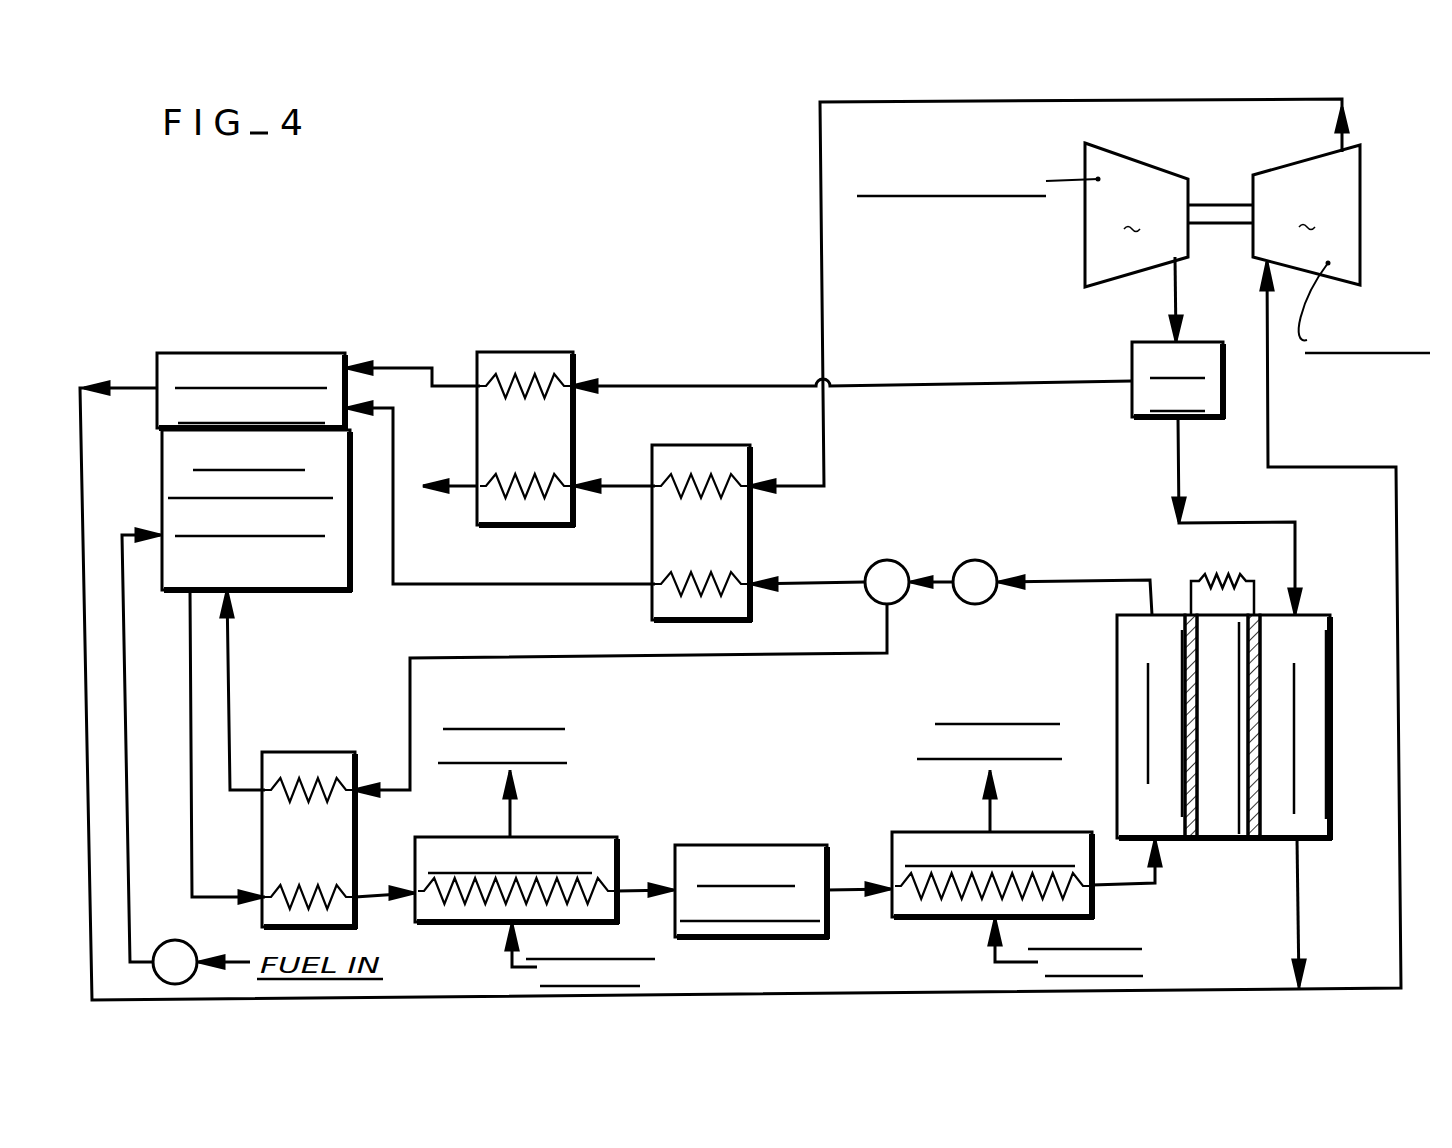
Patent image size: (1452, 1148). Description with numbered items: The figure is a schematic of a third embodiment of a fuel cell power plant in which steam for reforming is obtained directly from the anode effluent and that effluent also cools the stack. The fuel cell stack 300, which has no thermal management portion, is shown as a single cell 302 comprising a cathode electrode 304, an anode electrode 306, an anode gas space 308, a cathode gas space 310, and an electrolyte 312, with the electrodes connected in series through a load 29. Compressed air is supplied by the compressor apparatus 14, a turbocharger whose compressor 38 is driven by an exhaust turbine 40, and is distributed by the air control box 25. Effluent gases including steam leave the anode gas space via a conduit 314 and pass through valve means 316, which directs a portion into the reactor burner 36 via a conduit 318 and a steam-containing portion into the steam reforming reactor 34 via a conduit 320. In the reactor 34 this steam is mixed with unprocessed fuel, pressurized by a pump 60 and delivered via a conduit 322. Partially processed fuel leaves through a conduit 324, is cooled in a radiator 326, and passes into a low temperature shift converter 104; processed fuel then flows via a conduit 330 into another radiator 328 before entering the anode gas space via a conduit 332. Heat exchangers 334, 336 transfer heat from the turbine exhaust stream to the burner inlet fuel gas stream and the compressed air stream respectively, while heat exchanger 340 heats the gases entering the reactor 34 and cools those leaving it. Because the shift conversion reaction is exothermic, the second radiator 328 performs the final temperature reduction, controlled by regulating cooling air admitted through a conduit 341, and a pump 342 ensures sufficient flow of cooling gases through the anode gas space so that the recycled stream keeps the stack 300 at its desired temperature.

The compressor apparatus 14 is at (1143, 223).
The compressor 38 is at (1136, 215).
The exhaust turbine 40 is at (1374, 167).
The air control box 25 is at (1138, 344).
The reactor burner 36 is at (178, 365).
The steam reforming reactor 34 is at (256, 586).
The heat exchanger 336 is at (527, 360).
The heat exchanger 334 is at (698, 457).
The heat exchanger 340 is at (305, 755).
The conduit 318 is at (820, 580).
The valve means 316 is at (887, 560).
The pump 342 is at (977, 560).
The conduit 314 is at (1086, 579).
The conduit 320 is at (793, 661).
The conduit 322 is at (127, 720).
The conduit 324 is at (192, 658).
The pump 60 is at (185, 912).
The radiator 326 is at (560, 838).
The shift converter 104 is at (735, 850).
The conduit 330 is at (845, 885).
The radiator 328 is at (915, 835).
The conduit 341 is at (990, 962).
The conduit 332 is at (1124, 885).
The fuel cell stack 300 is at (1222, 729).
The anode gas space 308 is at (1127, 630).
The anode electrode 306 is at (1192, 840).
The electrolyte 312 is at (1240, 626).
The cell 302 is at (1237, 840).
The cathode electrode 304 is at (1255, 840).
The cathode gas space 310 is at (1318, 625).
The load 29 is at (1222, 548).